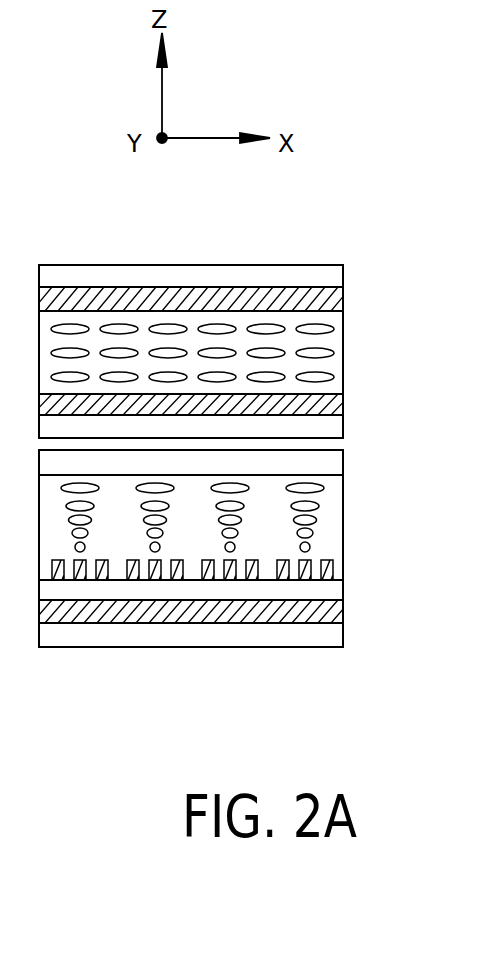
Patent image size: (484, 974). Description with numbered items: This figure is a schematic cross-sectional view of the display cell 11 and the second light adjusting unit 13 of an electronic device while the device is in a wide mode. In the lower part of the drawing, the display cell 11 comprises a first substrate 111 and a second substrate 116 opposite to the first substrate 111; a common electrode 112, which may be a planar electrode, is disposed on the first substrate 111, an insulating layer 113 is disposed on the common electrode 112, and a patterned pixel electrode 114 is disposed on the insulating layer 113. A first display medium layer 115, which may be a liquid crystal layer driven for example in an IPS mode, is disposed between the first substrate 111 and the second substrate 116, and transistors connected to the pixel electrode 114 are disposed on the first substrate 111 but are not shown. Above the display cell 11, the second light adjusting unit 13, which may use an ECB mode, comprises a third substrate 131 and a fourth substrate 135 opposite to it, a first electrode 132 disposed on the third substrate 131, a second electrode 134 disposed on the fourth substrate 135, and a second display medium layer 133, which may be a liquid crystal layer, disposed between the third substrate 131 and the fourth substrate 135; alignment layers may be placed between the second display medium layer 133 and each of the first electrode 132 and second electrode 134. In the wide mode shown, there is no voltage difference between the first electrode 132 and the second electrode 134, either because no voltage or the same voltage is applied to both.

The display cell 11 is at (430, 448).
The first substrate 111 is at (334, 637).
The common electrode 112 is at (338, 612).
The insulating layer 113 is at (332, 591).
The pixel electrode 114 is at (334, 571).
The first display medium layer 115 is at (328, 510).
The second substrate 116 is at (338, 461).
The second light adjusting unit 13 is at (430, 258).
The third substrate 131 is at (336, 427).
The first electrode 132 is at (338, 405).
The second display medium layer 133 is at (328, 349).
The second electrode 134 is at (338, 298).
The fourth substrate 135 is at (338, 276).